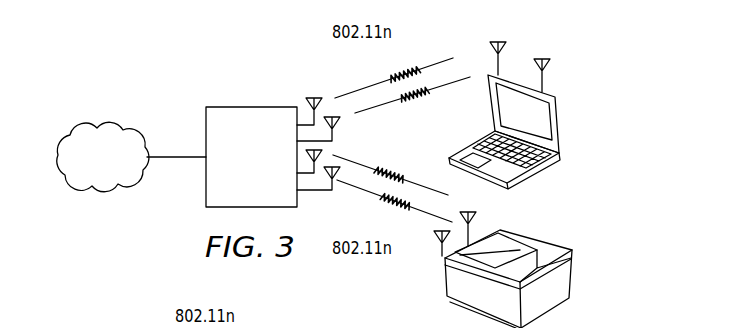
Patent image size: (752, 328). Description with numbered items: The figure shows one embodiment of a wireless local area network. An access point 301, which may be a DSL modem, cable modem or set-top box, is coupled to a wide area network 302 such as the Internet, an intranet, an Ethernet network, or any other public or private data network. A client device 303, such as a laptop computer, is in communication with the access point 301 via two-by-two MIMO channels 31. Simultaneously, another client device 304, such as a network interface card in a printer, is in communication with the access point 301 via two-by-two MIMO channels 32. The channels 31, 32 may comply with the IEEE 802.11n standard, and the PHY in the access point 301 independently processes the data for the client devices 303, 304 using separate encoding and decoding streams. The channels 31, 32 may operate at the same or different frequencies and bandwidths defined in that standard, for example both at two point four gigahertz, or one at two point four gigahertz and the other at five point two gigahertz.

The access point 301 is at (251, 107).
The wide area network (WAN) 302 is at (87, 123).
The client device 303 is at (562, 131).
The client device 304 is at (572, 272).
The 2×2 MIMO channels 31 is at (394, 104).
The 2×2 MIMO channels 32 is at (382, 167).